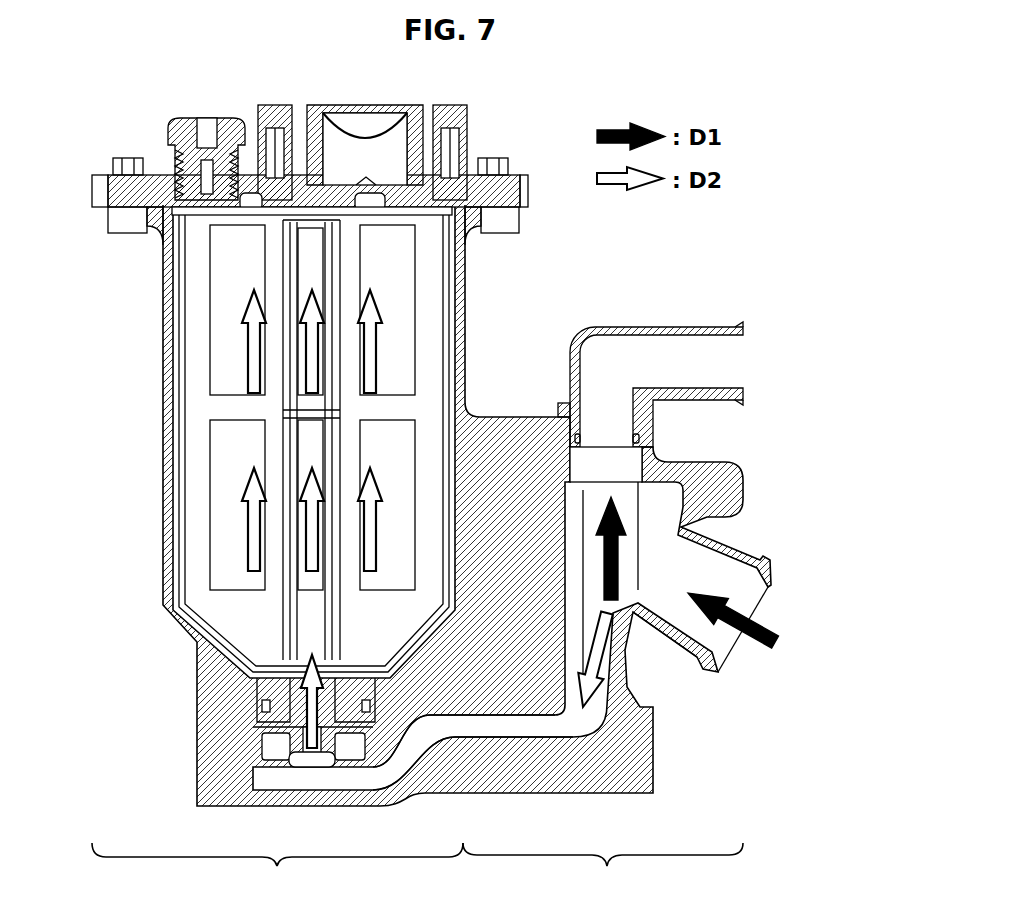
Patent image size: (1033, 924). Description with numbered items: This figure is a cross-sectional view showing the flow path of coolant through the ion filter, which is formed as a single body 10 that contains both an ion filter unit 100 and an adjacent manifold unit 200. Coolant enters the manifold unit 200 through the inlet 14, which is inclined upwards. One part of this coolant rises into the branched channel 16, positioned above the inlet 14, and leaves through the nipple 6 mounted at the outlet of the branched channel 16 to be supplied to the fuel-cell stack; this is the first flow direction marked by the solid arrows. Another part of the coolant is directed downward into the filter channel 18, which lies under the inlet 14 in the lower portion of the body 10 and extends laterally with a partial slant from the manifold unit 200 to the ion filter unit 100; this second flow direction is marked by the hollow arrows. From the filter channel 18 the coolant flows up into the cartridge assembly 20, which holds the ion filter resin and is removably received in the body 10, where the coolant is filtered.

The nipple 6 is at (668, 348).
The body 10 is at (207, 140).
The inlet 14 is at (726, 640).
The branched channel 16 is at (628, 503).
The filter channel 18 is at (504, 727).
The cartridge assembly 20 is at (228, 408).
The ion filter unit 100 is at (405, 501).
The manifold unit 200 is at (617, 671).